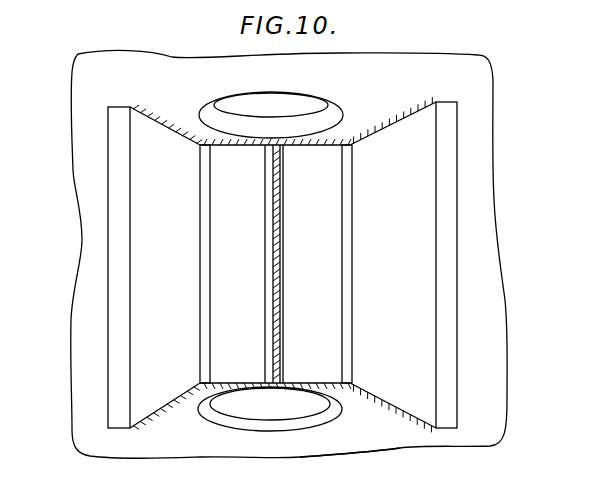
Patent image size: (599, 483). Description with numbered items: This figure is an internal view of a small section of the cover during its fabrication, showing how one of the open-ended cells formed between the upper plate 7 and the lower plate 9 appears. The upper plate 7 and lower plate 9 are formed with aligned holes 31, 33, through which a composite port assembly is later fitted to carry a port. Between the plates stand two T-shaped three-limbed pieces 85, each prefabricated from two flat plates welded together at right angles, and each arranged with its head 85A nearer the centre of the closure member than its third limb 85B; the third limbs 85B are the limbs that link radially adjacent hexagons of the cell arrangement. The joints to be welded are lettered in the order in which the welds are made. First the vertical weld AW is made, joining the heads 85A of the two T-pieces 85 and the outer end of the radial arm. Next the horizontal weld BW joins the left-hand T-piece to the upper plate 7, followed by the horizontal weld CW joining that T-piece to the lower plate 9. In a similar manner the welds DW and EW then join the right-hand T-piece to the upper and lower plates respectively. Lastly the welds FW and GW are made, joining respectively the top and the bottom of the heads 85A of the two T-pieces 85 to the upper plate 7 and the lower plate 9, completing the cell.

The upper plate 7 is at (422, 62).
The lower plate 9 is at (352, 430).
The hole in upper plate 31 is at (236, 110).
The hole in lower plate 33 is at (260, 410).
The T-shaped three limbed piece 85 is at (284, 265).
The head 85A is at (213, 222).
The third limb 85B is at (113, 202).
The vertical weld AW is at (281, 258).
The horizontal weld BW is at (154, 122).
The horizontal weld CW is at (175, 401).
The weld DW is at (390, 140).
The weld EW is at (372, 398).
The weld FW is at (325, 147).
The weld GW is at (316, 366).